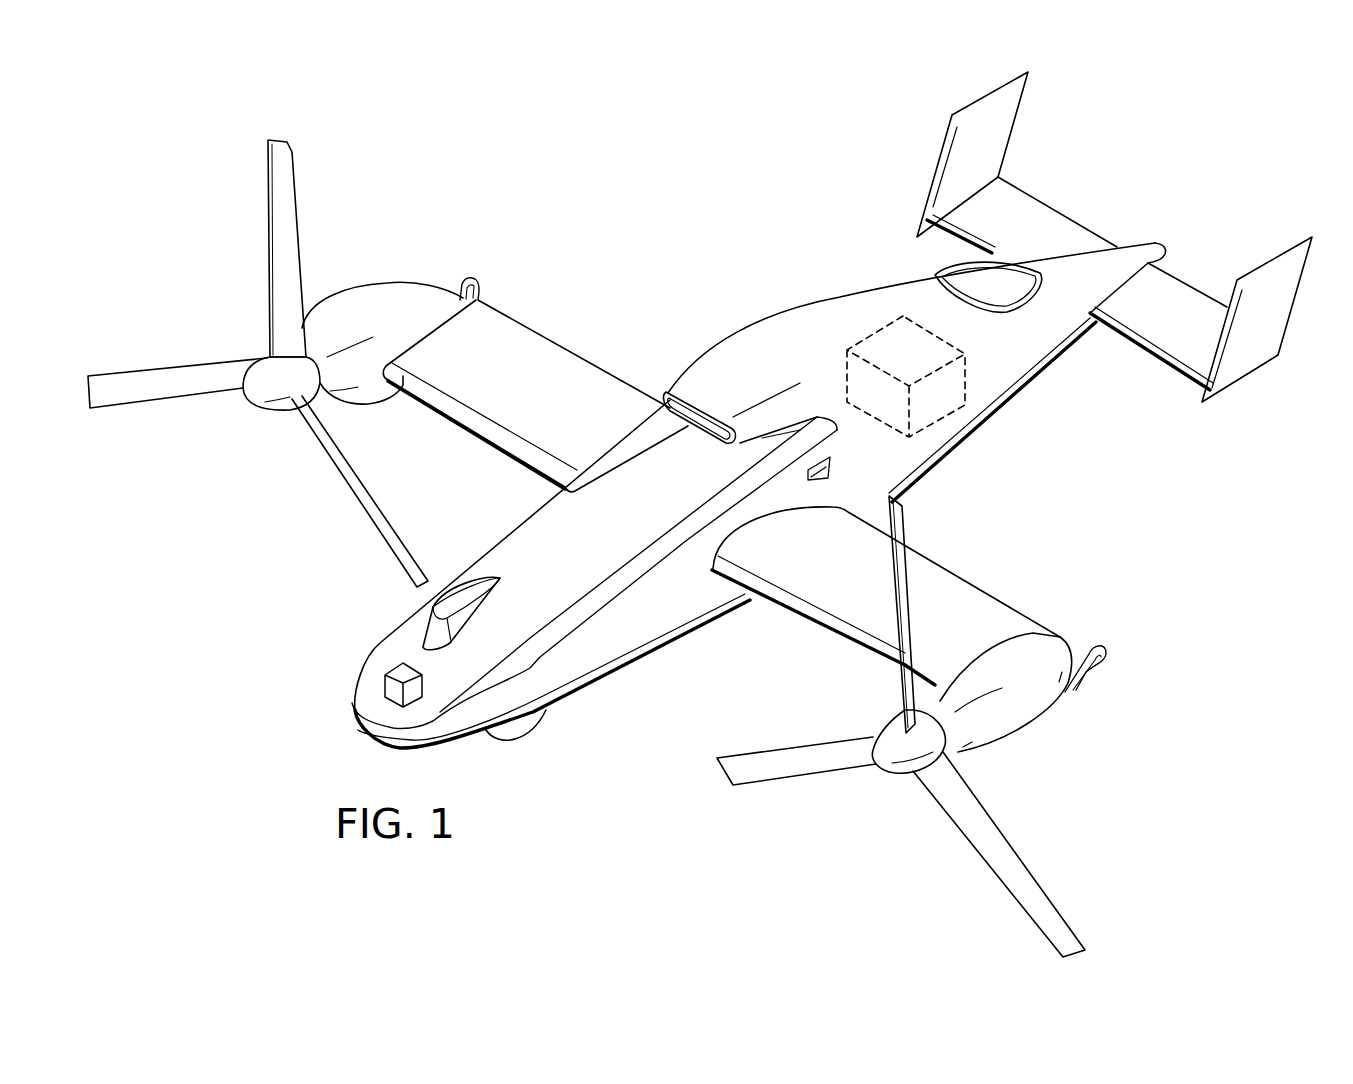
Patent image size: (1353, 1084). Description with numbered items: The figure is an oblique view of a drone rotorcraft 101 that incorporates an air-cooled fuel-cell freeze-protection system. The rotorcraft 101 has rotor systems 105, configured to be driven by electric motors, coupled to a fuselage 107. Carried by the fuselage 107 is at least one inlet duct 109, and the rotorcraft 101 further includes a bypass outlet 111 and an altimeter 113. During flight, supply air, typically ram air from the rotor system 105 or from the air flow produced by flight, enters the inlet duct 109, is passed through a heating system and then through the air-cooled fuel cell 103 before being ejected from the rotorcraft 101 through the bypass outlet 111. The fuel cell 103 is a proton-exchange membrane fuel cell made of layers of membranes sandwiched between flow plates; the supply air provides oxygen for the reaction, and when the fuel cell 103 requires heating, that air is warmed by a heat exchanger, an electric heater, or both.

The rotorcraft 101 is at (367, 105).
The air-cooled fuel cell 103 is at (873, 330).
The rotor systems 105 is at (262, 412).
The fuselage 107 is at (578, 693).
The inlet duct 109 is at (700, 382).
The bypass outlet 111 is at (1012, 256).
The altimeter 113 is at (398, 662).